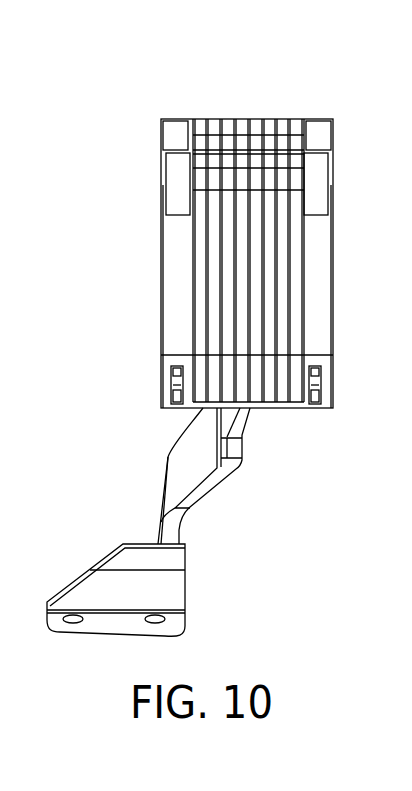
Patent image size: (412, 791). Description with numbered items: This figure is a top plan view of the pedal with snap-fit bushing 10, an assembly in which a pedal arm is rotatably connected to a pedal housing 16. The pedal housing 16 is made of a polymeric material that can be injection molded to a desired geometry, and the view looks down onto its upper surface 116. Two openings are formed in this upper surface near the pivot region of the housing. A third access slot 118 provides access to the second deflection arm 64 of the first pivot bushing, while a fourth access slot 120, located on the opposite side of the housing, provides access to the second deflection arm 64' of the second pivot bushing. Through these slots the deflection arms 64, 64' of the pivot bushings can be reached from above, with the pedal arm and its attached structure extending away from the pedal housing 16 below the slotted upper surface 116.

The pedal with snap-fit bushing 10 is at (138, 106).
The pedal housing 16 is at (322, 143).
The upper surface 116 is at (322, 264).
The second deflection arm 64' is at (139, 369).
The second deflection arm 64 is at (347, 372).
The fourth access slot 120 is at (173, 395).
The third access slot 118 is at (316, 395).